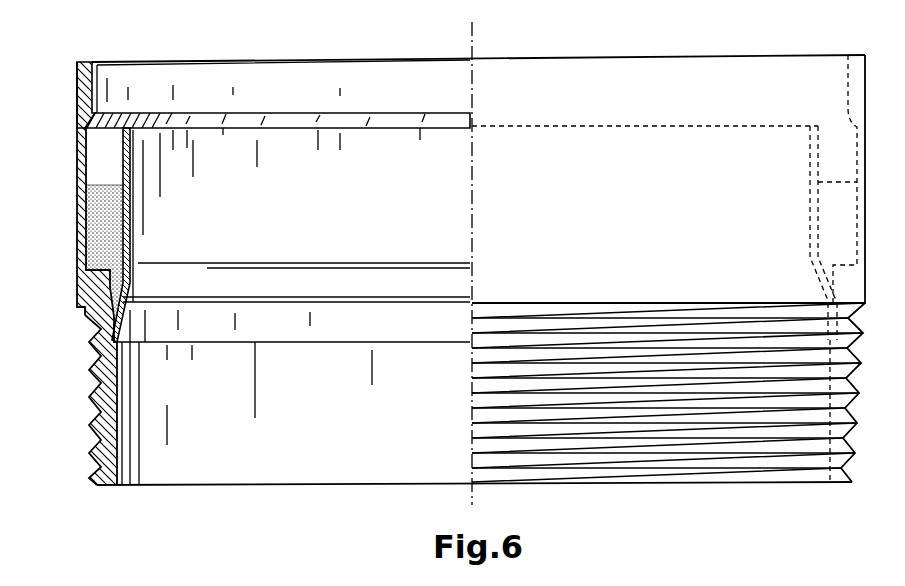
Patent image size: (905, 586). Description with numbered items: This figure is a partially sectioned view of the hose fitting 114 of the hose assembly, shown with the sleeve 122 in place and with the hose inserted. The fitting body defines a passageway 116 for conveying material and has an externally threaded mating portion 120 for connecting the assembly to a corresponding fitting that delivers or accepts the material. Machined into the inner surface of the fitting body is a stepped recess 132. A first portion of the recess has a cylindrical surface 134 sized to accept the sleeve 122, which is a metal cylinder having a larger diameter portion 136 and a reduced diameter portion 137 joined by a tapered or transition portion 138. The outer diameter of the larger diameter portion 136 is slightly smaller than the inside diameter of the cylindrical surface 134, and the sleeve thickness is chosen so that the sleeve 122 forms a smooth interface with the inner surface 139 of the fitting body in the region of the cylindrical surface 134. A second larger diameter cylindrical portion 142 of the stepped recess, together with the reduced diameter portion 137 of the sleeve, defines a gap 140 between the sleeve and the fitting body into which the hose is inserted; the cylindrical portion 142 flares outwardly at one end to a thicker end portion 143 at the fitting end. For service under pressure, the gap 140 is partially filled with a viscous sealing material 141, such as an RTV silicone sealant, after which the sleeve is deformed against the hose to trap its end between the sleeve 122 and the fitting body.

The thicker end portion 143 is at (88, 95).
The reduced diameter portion of the sleeve 137 is at (131, 168).
The gap 140 is at (112, 182).
The second larger diameter cylindrical portion 142 is at (88, 197).
The stepped recess 132 is at (116, 206).
The hose fitting 114 is at (86, 245).
The sleeve 122 is at (140, 237).
The tapered or transition portion 138 is at (130, 283).
The viscous sealing material 141 is at (84, 266).
The cylindrical surface 134 is at (84, 312).
The larger diameter portion of the sleeve 136 is at (118, 332).
The mating portion 120 is at (95, 412).
The inner surface of the fitting body 139 is at (128, 486).
The passageway 116 is at (263, 445).